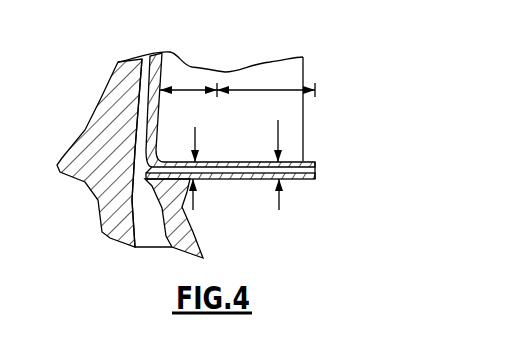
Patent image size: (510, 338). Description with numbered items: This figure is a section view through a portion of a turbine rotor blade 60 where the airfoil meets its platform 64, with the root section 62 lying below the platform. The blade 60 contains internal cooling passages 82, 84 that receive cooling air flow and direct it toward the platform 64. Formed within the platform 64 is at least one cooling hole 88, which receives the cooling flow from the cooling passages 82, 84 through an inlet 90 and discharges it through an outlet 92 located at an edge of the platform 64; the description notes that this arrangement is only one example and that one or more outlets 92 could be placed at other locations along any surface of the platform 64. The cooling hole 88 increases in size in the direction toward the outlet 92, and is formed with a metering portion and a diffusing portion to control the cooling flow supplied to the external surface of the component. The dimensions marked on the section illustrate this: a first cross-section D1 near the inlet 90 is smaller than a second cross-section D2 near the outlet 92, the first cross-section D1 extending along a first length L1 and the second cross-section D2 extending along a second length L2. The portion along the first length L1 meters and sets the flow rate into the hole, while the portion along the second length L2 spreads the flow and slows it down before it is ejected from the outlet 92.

The turbine rotor blade 60 is at (123, 75).
The internal cooling passage 82 is at (145, 103).
The internal cooling passage 84 is at (230, 110).
The inlet 90 is at (145, 165).
The root section 62 is at (190, 235).
The platform 64 is at (313, 162).
The outlet 92 is at (319, 175).
The cooling hole 88 is at (251, 173).
The first length L1 is at (189, 88).
The second length L2 is at (276, 88).
The first cross-section D1 is at (195, 137).
The second cross-section D2 is at (280, 208).